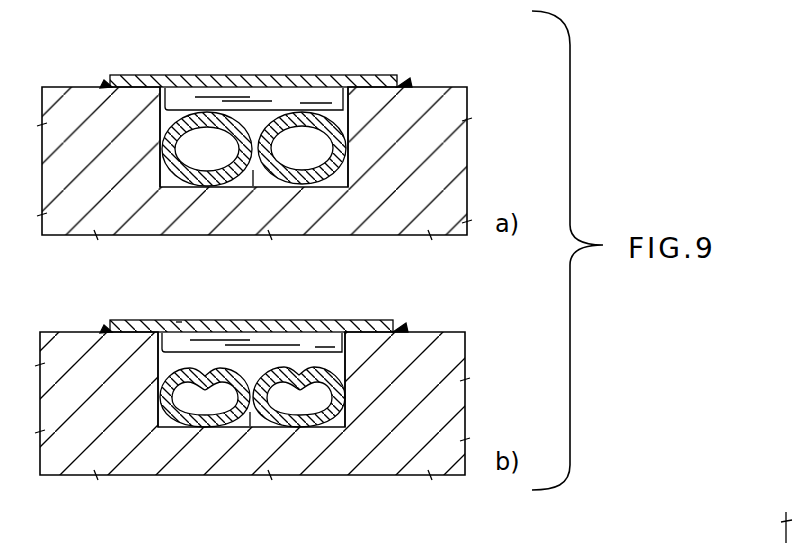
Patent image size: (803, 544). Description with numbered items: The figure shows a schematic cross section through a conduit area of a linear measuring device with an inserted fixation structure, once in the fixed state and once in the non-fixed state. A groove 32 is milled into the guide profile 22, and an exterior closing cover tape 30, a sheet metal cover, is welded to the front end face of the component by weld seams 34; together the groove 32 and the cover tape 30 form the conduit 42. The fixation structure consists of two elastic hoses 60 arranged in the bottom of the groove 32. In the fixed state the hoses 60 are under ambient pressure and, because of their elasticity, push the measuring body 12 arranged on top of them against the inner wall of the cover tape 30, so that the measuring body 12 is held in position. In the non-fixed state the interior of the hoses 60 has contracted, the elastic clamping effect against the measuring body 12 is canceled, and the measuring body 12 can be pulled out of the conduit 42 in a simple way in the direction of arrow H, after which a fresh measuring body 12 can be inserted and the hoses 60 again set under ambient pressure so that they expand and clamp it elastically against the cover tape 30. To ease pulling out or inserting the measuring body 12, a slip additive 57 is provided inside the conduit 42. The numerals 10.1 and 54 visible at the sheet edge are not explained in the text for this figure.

In FIG. 9a, the guide profile 22 is at (468, 97).
In FIG. 9b, the guide profile 22 is at (466, 344).
In FIG. 9a, the cover tape 30 is at (206, 76).
In FIG. 9b, the cover tape 30 is at (258, 320).
In FIG. 9a, the measuring body 12 is at (278, 97).
In FIG. 9b, the measuring body 12 is at (332, 342).
In FIG. 9a, the weld seams 34 is at (108, 85).
In FIG. 9b, the weld seams 34 is at (108, 330).
In FIG. 9a, the elastic hoses 60 is at (249, 183).
In FIG. 9b, the elastic hoses 60 is at (250, 429).
In FIG. 9a, the conduit 42 is at (349, 152).
In FIG. 9b, the conduit 42 is at (346, 393).
In FIG. 9a, the groove 32 is at (160, 166).
In FIG. 9b, the groove 32 is at (158, 406).
In FIG. 9a, the slip additive 57 is at (253, 181).
In FIG. 9b, the slip additive 57 is at (247, 420).
In FIG. 9b, the arrow H is at (178, 322).
In FIG. 9b, the sensor arrangement 10.1 is at (568, 530).
In FIG. 9b, the element 54 is at (686, 527).